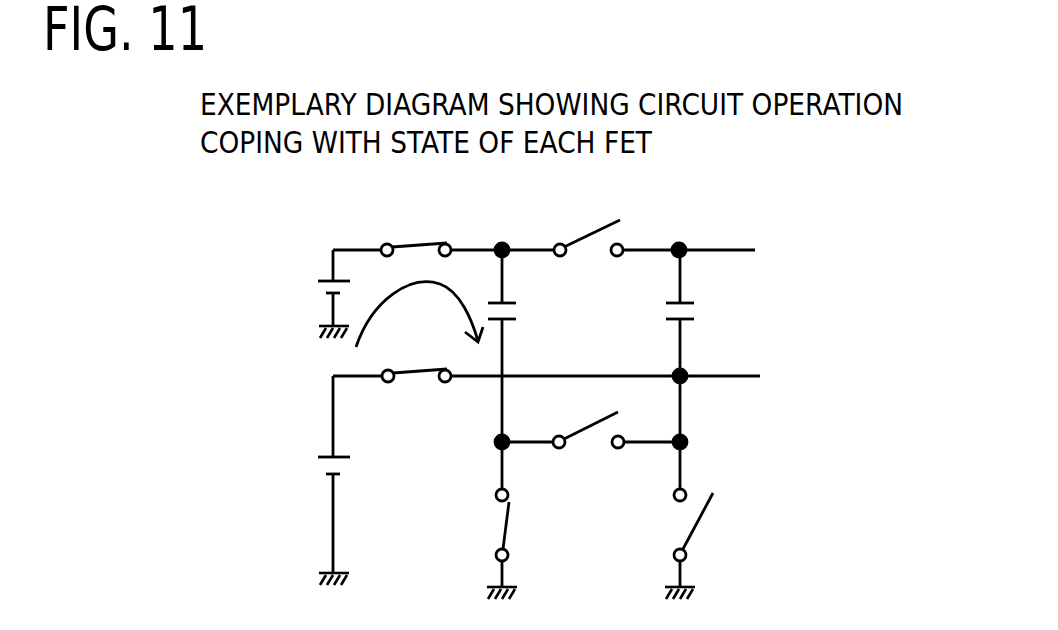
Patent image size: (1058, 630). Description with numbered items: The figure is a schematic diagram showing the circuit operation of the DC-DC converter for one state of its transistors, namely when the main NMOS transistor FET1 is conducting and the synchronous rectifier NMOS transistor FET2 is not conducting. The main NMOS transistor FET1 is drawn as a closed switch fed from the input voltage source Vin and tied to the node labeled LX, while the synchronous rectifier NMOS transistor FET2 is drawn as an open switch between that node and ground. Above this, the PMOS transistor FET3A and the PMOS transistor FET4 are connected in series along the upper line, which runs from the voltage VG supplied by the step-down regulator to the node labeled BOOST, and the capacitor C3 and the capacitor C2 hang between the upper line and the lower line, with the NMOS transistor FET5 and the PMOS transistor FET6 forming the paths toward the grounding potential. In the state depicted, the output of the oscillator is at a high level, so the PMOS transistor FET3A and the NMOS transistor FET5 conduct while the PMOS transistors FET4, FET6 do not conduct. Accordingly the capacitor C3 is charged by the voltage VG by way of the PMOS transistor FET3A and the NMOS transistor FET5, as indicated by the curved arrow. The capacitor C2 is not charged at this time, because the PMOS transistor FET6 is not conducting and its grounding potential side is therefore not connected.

The PMOS transistor FET3A is at (404, 220).
The PMOS transistor FET4 is at (588, 221).
The main NMOS transistor FET1 is at (416, 394).
The PMOS transistor FET6 is at (586, 450).
The NMOS transistor FET5 is at (466, 544).
The synchronous rectifier NMOS transistor FET2 is at (719, 544).
The capacitor C3 is at (520, 311).
The capacitor C2 is at (699, 314).
The voltage VG is at (307, 304).
The input voltage source Vin is at (310, 512).
The BOOST terminal BOOST is at (766, 247).
The LX terminal LX is at (740, 379).